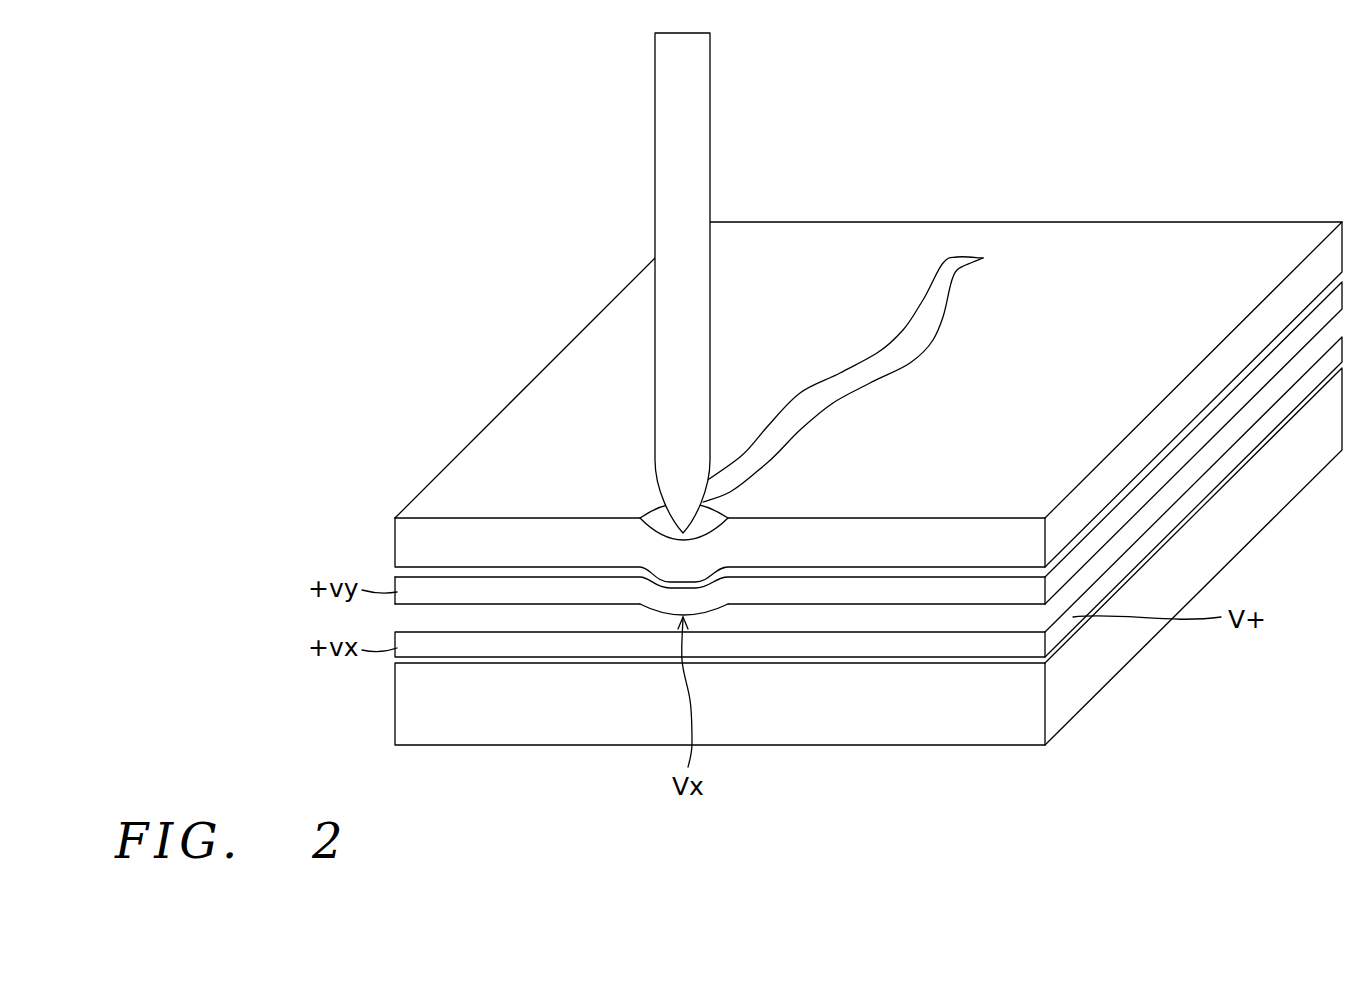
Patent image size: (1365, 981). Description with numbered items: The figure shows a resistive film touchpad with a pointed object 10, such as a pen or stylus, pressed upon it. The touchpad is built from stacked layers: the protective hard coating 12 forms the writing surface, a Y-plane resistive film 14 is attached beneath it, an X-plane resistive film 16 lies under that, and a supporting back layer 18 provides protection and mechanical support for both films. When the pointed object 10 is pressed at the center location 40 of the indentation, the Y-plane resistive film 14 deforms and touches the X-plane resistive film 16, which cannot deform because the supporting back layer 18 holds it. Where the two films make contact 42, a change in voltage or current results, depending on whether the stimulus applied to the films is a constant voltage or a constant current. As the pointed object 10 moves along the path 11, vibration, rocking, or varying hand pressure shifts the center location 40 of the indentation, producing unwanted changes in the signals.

The pointed object 10 is at (697, 80).
The path 11 is at (923, 312).
The protective hard coating 12 is at (423, 545).
The Y-plane resistive film 14 is at (428, 595).
The X-plane resistive film 16 is at (437, 645).
The supporting back layer 18 is at (430, 723).
The center location of the indentation 40 is at (702, 517).
The contact point 42 is at (683, 615).